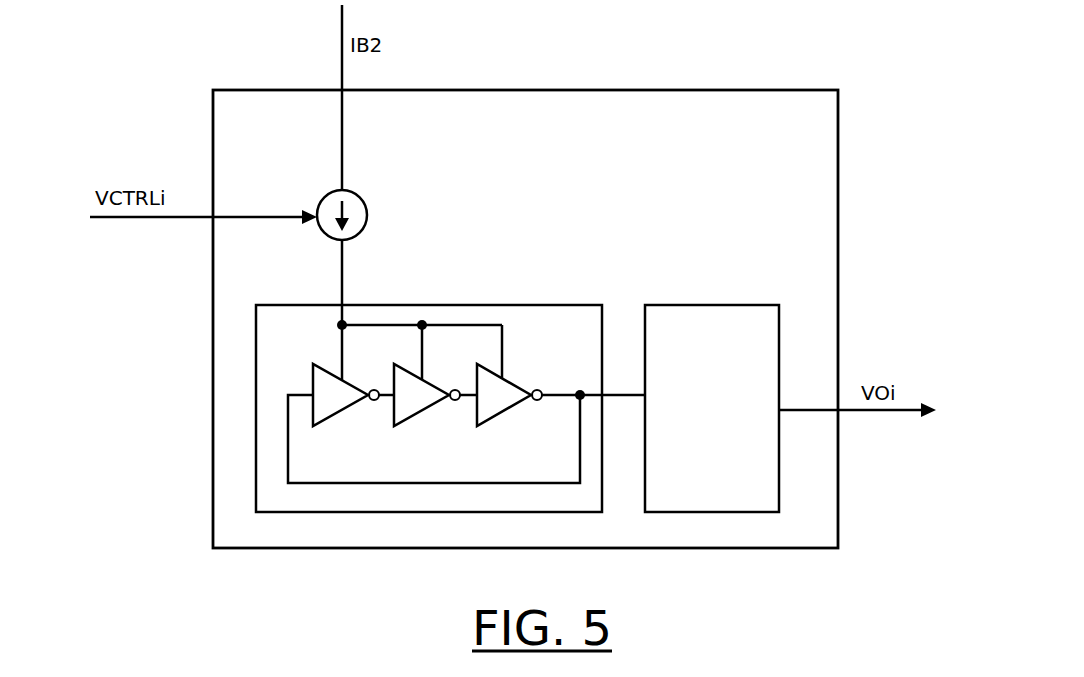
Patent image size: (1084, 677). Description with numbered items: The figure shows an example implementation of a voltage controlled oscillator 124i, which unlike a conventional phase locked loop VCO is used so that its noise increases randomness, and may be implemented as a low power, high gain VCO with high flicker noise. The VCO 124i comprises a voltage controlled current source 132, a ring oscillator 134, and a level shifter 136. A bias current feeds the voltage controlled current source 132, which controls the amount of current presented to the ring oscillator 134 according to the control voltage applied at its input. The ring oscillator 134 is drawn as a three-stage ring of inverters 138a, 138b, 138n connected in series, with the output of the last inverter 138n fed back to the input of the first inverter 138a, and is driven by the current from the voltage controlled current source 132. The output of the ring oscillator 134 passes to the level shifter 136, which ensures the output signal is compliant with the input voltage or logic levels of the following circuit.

The voltage controlled oscillator 124i is at (308, 90).
The voltage controlled current source 132 is at (367, 213).
The ring oscillator 134 is at (440, 392).
The level shifter 136 is at (688, 303).
The inverter 138a is at (323, 422).
The inverter 138b is at (404, 422).
The inverter 138n is at (487, 422).